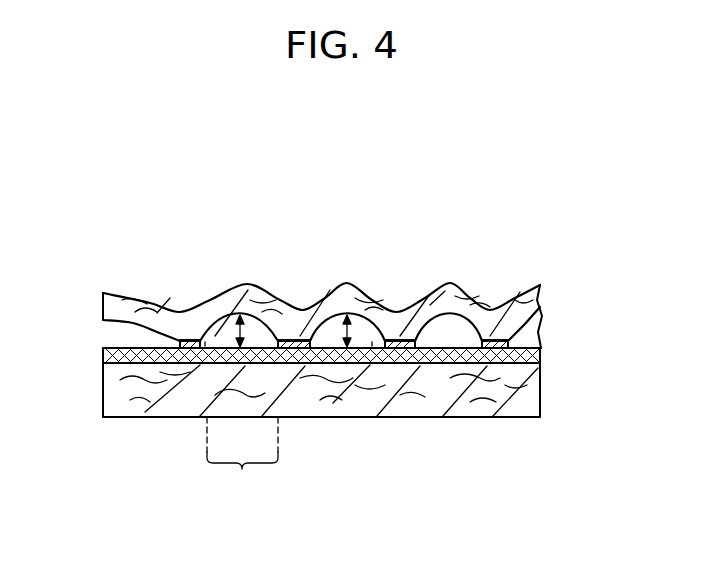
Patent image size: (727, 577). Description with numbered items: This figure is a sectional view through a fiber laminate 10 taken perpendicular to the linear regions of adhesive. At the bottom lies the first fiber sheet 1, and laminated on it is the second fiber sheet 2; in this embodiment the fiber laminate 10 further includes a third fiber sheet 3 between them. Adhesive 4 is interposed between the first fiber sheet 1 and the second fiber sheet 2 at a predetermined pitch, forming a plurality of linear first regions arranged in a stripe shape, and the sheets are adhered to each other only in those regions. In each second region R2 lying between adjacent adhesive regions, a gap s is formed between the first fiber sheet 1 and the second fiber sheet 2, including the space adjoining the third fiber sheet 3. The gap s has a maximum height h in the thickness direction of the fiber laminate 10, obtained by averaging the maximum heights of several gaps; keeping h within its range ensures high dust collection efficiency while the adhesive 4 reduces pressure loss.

The fiber laminate 10 is at (140, 268).
The first fiber sheet 1 is at (418, 405).
The second fiber sheet 2 is at (470, 295).
The third fiber sheet 3 is at (437, 355).
The adhesive 4 is at (297, 338).
The maximum height of gap h is at (256, 303).
The gap s is at (213, 322).
The second region R2 is at (242, 460).